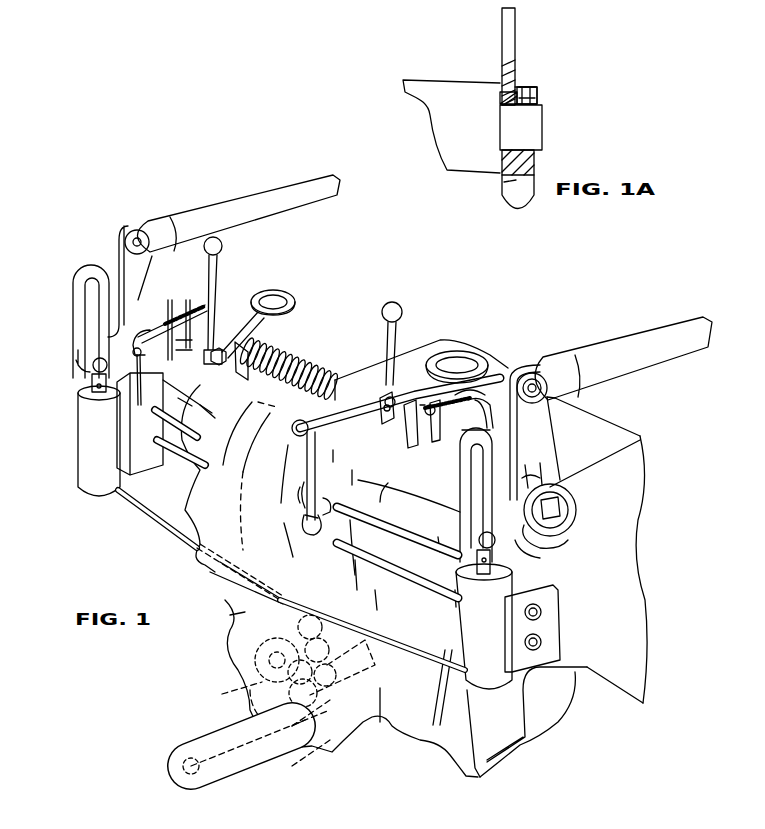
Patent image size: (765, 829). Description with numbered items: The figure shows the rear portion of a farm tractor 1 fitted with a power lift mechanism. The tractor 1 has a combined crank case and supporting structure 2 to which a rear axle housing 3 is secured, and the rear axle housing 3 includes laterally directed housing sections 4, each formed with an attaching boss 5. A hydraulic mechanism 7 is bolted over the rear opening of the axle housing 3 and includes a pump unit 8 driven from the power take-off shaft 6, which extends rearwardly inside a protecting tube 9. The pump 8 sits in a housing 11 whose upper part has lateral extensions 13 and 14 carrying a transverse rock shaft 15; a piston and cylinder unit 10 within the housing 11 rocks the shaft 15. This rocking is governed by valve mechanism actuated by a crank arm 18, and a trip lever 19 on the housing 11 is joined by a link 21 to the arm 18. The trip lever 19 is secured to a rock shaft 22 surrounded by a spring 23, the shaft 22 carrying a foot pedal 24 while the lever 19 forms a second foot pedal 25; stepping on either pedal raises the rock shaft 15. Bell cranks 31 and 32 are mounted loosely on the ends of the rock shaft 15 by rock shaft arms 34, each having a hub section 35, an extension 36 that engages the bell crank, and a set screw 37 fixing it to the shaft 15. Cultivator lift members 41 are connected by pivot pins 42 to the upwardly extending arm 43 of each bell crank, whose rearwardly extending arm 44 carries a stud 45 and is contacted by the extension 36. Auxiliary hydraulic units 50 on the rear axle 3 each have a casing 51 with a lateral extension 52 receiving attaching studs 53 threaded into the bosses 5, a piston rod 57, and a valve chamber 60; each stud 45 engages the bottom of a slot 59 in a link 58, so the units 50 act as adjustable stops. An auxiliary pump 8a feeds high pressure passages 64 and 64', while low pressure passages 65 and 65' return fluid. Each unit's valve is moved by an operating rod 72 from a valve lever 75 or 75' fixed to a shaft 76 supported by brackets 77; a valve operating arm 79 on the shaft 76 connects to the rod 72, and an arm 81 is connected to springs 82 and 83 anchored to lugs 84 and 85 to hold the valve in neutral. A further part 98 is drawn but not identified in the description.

In FIG. 1, the farm tractor 1 is at (456, 330).
In FIG. 1, the combined crank case and supporting structure 2 is at (606, 440).
In FIG. 1, the rear axle housing 3 is at (574, 718).
In FIG. 1, the laterally directed housing section 4 is at (158, 478).
In FIG. 1, the attaching boss 5 is at (545, 585).
In FIG. 1, the power take-off shaft 6 is at (200, 738).
In FIG. 1, the hydraulic mechanism 7 is at (180, 572).
In FIG. 1, the pump unit 8 is at (326, 615).
In FIG. 1, the auxiliary pump 8a is at (287, 690).
In FIG. 1, the protecting tube 9 is at (232, 760).
In FIG. 1, the piston and cylinder unit 10 is at (384, 713).
In FIG. 1, the housing 11 is at (232, 618).
In FIG. 1, the lateral extension 13 is at (196, 408).
In FIG. 1A, the lateral extension 14 is at (446, 153).
In FIG. 1, the lateral extension 14 is at (388, 485).
In FIG. 1A, the transverse rock shaft 15 is at (543, 128).
In FIG. 1, the transverse rock shaft 15 is at (560, 507).
In FIG. 1, the crank arm 18 is at (315, 535).
In FIG. 1, the trip lever 19 is at (313, 406).
In FIG. 1, the link 21 is at (308, 468).
In FIG. 1, the rock shaft 22 is at (380, 396).
In FIG. 1, the spring 23 is at (290, 365).
In FIG. 1, the foot pedal 24 is at (255, 314).
In FIG. 1, the second foot pedal 25 is at (420, 380).
In FIG. 1, the bell crank 31 is at (112, 246).
In FIG. 1A, the bell crank 32 is at (523, 41).
In FIG. 1, the bell crank 32 is at (567, 464).
In FIG. 1A, the rock shaft arm 34 is at (547, 98).
In FIG. 1, the rock shaft arm 34 is at (580, 544).
In FIG. 1A, the hub section 35 is at (500, 99).
In FIG. 1A, the extension 36 is at (512, 200).
In FIG. 1, the extension 36 is at (535, 555).
In FIG. 1A, the set screw 37 is at (526, 88).
In FIG. 1, the set screw 37 is at (536, 475).
In FIG. 1, the cultivator lift member 41 is at (290, 192).
In FIG. 1, the pivot pin 42 is at (138, 231).
In FIG. 1, the upwardly extending arm 43 is at (145, 270).
In FIG. 1, the rearwardly extending arm 44 is at (75, 366).
In FIG. 1, the stud 45 is at (92, 360).
In FIG. 1, the auxiliary hydraulic unit 50 is at (72, 465).
In FIG. 1, the casing 51 is at (88, 480).
In FIG. 1, the lateral extension 52 is at (541, 644).
In FIG. 1, the attaching stud 53 is at (541, 612).
In FIG. 1, the piston rod 57 is at (80, 398).
In FIG. 1, the link 58 is at (78, 300).
In FIG. 1, the slot 59 is at (88, 275).
In FIG. 1, the valve chamber 60 is at (130, 480).
In FIG. 1, the right hand high pressure passage 64 is at (397, 567).
In FIG. 1, the left hand high pressure passage 64' is at (164, 429).
In FIG. 1, the right hand low pressure passage 65 is at (383, 584).
In FIG. 1, the left hand low pressure passage 65' is at (191, 466).
In FIG. 1, the operating rod 72 is at (150, 395).
In FIG. 1, the valve lever 75 is at (226, 297).
In FIG. 1, the valve lever 75' is at (377, 343).
In FIG. 1, the shaft 76 is at (178, 345).
In FIG. 1, the bracket 77 is at (215, 364).
In FIG. 1, the valve operating arm 79 is at (150, 325).
In FIG. 1, the arm 81 is at (470, 394).
In FIG. 1, the spring 82 is at (198, 300).
In FIG. 1, the spring 83 is at (200, 302).
In FIG. 1, the lug 84 is at (170, 300).
In FIG. 1, the lug 85 is at (240, 320).
In FIG. 1, the cable 98 is at (158, 524).